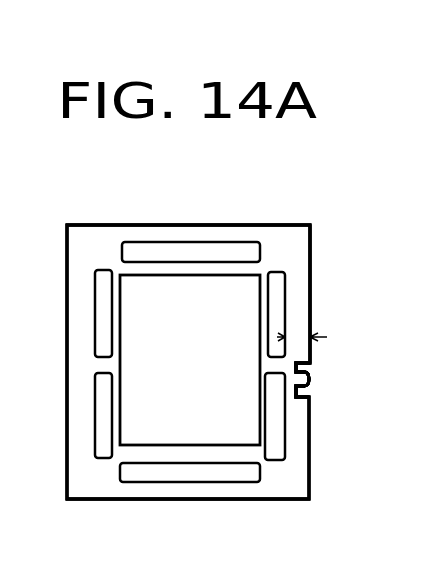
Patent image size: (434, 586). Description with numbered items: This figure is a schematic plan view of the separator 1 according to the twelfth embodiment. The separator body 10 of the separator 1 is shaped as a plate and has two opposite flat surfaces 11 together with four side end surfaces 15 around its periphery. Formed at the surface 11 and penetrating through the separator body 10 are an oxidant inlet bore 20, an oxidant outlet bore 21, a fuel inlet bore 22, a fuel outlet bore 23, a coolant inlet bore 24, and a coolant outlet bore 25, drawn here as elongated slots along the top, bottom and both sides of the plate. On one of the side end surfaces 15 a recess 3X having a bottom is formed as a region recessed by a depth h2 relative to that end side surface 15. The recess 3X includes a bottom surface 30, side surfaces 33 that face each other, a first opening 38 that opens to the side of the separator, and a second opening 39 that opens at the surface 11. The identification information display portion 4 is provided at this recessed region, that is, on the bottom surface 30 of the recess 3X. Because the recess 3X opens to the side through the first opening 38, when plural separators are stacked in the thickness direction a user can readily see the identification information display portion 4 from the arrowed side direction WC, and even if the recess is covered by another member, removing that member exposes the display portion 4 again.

The separator 1 is at (55, 413).
The separator body 10 is at (67, 438).
The flat surface 11 is at (82, 468).
The side end surface 15 is at (67, 328).
The oxidant inlet bore 20 is at (178, 249).
The oxidant outlet bore 21 is at (207, 472).
The fuel inlet bore 22 is at (105, 453).
The fuel outlet bore 23 is at (278, 291).
The coolant inlet bore 24 is at (102, 294).
The coolant outlet bore 25 is at (275, 455).
The identification information display portion 4 is at (292, 371).
The bottom surface 30 is at (295, 389).
The side surfaces 33 is at (311, 363).
The first opening 38 is at (360, 380).
The second opening 39 is at (300, 376).
The recess 3X is at (305, 398).
The arrowed direction WC is at (352, 372).
The depth h2 is at (319, 340).